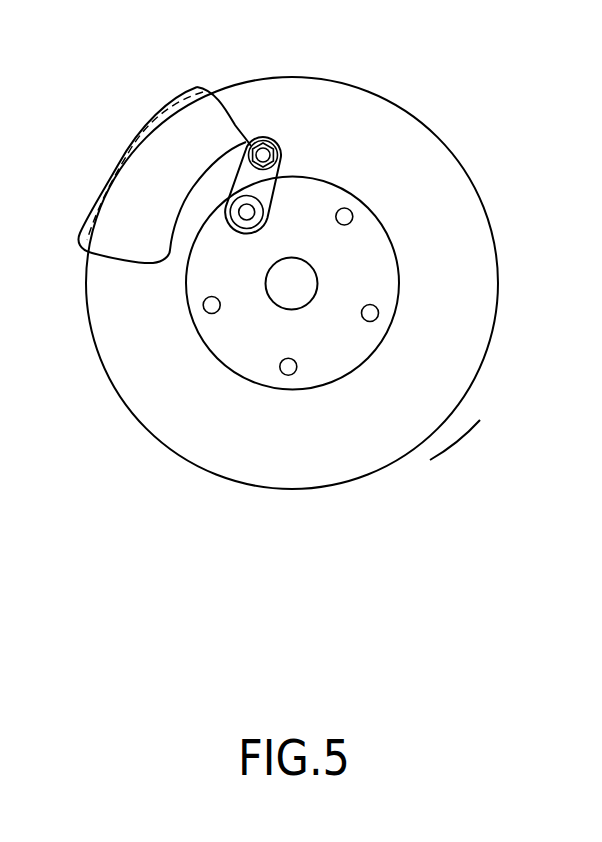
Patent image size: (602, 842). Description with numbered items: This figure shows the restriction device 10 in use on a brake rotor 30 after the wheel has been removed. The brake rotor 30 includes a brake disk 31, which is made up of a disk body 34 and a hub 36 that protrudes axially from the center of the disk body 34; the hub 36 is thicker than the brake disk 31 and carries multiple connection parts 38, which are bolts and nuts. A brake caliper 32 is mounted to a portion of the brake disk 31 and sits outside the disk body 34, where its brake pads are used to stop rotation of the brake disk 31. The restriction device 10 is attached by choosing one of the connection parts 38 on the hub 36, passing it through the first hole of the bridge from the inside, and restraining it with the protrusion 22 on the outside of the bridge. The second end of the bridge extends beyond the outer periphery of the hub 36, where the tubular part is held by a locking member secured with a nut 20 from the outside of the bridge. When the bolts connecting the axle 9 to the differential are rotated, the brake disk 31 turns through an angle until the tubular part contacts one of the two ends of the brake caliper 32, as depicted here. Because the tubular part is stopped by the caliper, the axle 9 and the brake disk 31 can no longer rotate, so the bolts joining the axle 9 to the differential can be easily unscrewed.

The axle 9 is at (302, 293).
The restriction device 10 is at (287, 156).
The nut 20 is at (252, 139).
The protrusion 22 is at (233, 226).
The brake rotor 30 is at (487, 194).
The brake disk 31 is at (457, 410).
The brake caliper 32 is at (205, 113).
The disk body 34 is at (465, 350).
The hub 36 is at (373, 262).
The connection parts 38 is at (349, 211).